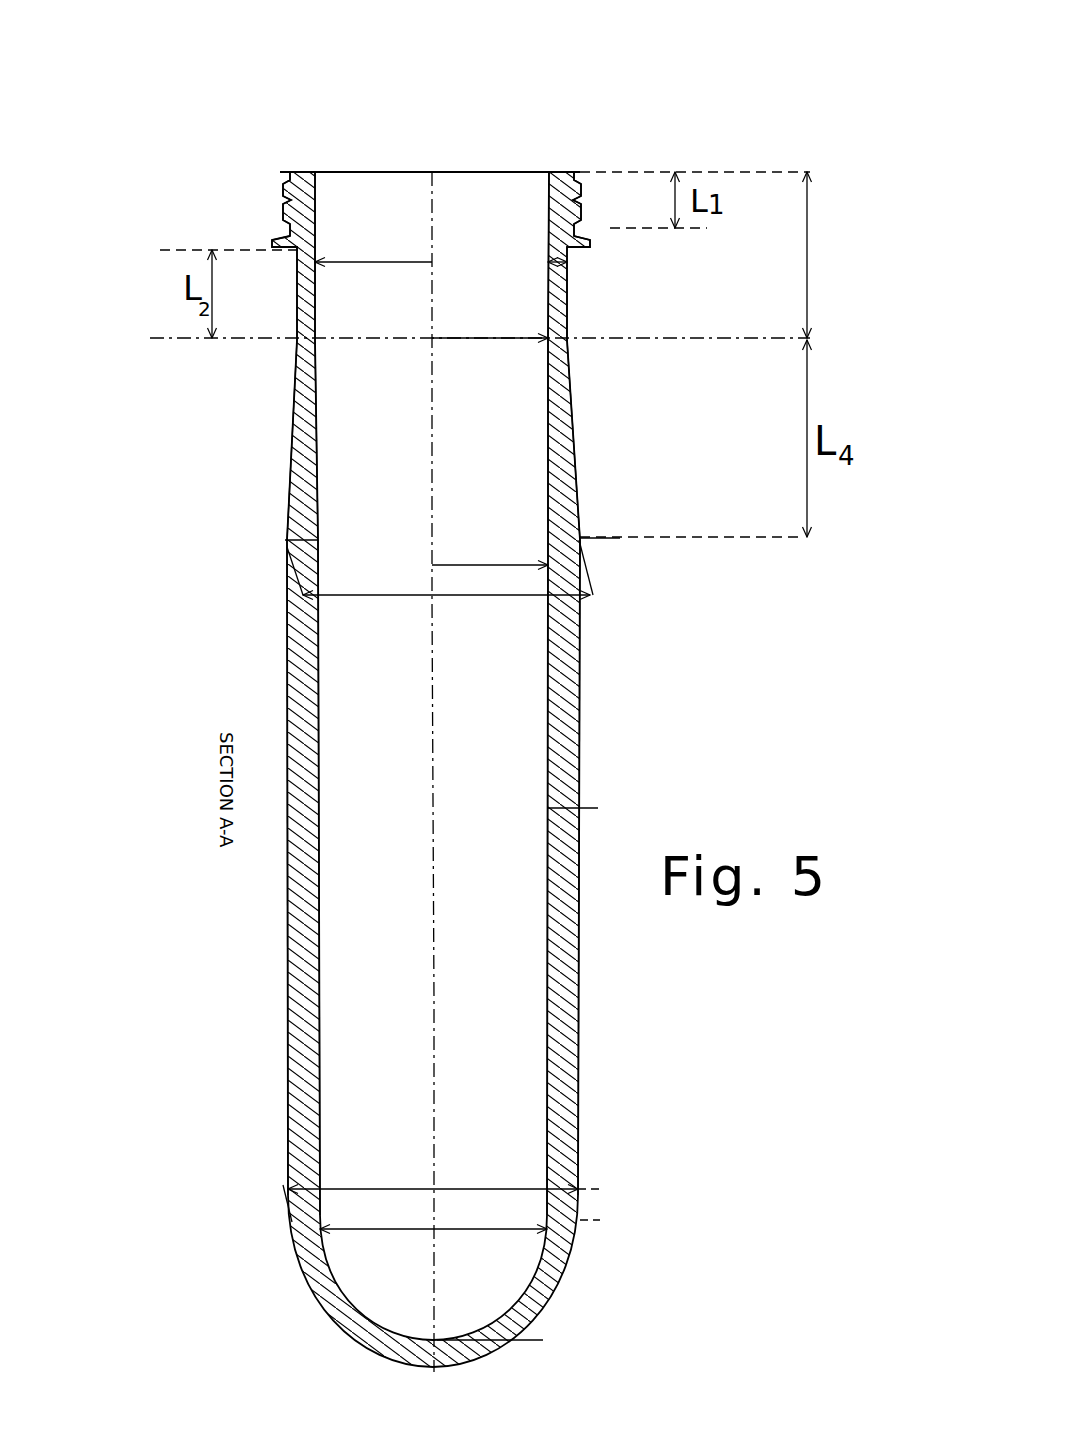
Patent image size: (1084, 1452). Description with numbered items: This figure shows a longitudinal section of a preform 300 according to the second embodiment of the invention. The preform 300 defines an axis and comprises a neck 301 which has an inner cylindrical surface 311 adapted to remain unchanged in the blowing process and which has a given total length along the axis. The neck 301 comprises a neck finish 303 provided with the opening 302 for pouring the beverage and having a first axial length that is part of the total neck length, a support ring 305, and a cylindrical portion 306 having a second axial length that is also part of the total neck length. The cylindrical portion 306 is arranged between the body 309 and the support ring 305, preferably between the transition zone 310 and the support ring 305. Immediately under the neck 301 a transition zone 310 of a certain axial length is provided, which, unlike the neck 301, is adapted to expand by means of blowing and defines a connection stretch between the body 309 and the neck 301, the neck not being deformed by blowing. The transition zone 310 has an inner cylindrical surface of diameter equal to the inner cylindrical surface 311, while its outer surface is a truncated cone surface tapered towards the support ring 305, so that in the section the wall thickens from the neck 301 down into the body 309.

The preform 300 is at (190, 88).
The neck 301 is at (805, 218).
The opening 302 is at (502, 172).
The neck finish 303 is at (290, 200).
The support ring 305 is at (290, 242).
The cylindrical portion 306 is at (292, 305).
The body 309 is at (288, 925).
The transition zone 310 is at (288, 445).
The inner cylindrical surface 311 is at (315, 303).